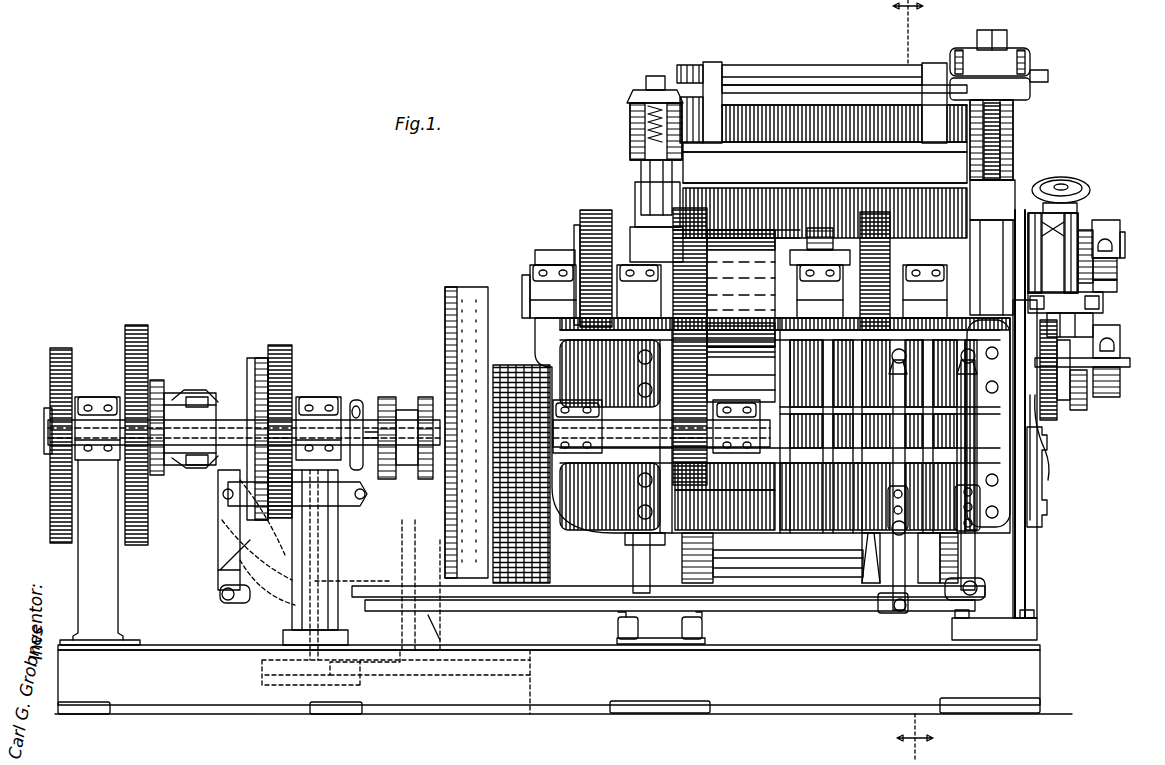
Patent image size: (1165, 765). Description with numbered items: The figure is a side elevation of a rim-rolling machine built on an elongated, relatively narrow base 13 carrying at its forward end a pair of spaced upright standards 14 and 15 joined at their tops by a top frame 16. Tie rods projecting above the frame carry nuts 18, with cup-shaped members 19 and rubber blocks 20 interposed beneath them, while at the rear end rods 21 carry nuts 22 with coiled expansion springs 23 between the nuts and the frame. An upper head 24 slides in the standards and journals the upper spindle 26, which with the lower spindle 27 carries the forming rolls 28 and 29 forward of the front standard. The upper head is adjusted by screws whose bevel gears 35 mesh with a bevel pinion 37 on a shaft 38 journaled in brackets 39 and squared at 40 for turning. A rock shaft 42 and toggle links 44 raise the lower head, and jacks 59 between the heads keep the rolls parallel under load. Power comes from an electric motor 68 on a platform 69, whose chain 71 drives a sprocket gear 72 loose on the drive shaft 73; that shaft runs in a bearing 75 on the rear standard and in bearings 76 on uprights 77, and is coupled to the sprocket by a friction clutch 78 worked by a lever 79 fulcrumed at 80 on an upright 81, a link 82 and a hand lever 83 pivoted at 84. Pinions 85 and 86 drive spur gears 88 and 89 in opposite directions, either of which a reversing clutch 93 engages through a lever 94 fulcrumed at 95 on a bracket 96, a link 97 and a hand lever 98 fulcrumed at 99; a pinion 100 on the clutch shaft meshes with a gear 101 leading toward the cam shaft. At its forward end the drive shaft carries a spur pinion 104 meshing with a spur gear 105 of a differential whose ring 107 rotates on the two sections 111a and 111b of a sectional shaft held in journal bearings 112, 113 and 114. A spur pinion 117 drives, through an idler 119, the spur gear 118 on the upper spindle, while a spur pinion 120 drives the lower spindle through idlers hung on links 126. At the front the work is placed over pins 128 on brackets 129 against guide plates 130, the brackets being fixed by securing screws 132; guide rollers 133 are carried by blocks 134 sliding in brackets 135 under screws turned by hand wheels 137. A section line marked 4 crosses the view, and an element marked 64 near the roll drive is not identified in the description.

The section line 4- 4 is at (917, 382).
The base 13 is at (563, 679).
The front standard 14 is at (1028, 568).
The rear standard 15 is at (632, 568).
The top frame 16 is at (790, 135).
The nuts 18 is at (996, 30).
The cup-shaped members 19 is at (1022, 62).
The rubber disks or blocks 20 is at (1030, 92).
The rods 21 is at (630, 92).
The nuts 22 is at (646, 76).
The coiled expansion springs 23 is at (640, 122).
The upper head 24 is at (833, 194).
The upper spindle 26 is at (1122, 250).
The lower spindle 27 is at (1128, 358).
The upper forming roll 28 is at (1075, 211).
The lower forming roll 29 is at (1063, 393).
The bevel gears 35 is at (627, 103).
The bevel pinion 37 is at (689, 65).
The shaft 38 is at (808, 74).
The brackets 39 is at (722, 64).
The squared end 40 is at (1048, 76).
The rock shaft 42 is at (772, 556).
The toggle links 44 is at (1045, 520).
The jacks 59 is at (752, 382).
The block 64 is at (1113, 220).
The electric motor 68 is at (441, 640).
The platform 69 is at (268, 670).
The chain 71 is at (536, 533).
The sprocket gear 72 is at (600, 452).
The drive shaft 73 is at (200, 406).
The bearing 75 is at (752, 458).
The bearings 76 is at (96, 398).
The uprights 77 is at (100, 552).
The friction clutch 78 is at (400, 390).
The lever 79 is at (356, 400).
The fulcrum 80 is at (364, 496).
The upright 81 is at (315, 557).
The link 82 is at (567, 605).
The hand lever 83 is at (895, 476).
The pivot 84 is at (892, 528).
The pinion 85 is at (155, 385).
The pinion 86 is at (292, 396).
The spur gear 88 is at (139, 325).
The spur gear 89 is at (280, 345).
The reversing clutch 93 is at (184, 386).
The lever 94 is at (222, 530).
The fulcrum 95 is at (223, 493).
The bracket 96 is at (218, 570).
The link 97 is at (520, 603).
The hand lever 98 is at (978, 557).
The fulcrum 99 is at (978, 518).
The pinion 100 is at (46, 452).
The gear 101 is at (59, 348).
The spur pinion 104 is at (725, 490).
The spur gear 105 is at (741, 326).
The ring 107 is at (770, 290).
The rear shaft section 111a is at (528, 276).
The forward shaft section 111b is at (994, 267).
The journal bearing 112 is at (560, 251).
The journal bearing 113 is at (804, 240).
The journal bearing 114 is at (931, 254).
The spur pinion 117 is at (609, 338).
The spur gear 118 is at (595, 210).
The idler 119 is at (580, 212).
The spur pinion 120 is at (870, 212).
The links 126 is at (708, 335).
The pins 128 is at (1112, 382).
The brackets 129 is at (1048, 408).
The guide plates 130 is at (1078, 407).
The securing screws 132 is at (1088, 327).
The guide rollers 133 is at (1103, 296).
The blocks 134 is at (1116, 267).
The brackets 135 is at (1058, 239).
The hand wheels 137 is at (1063, 178).